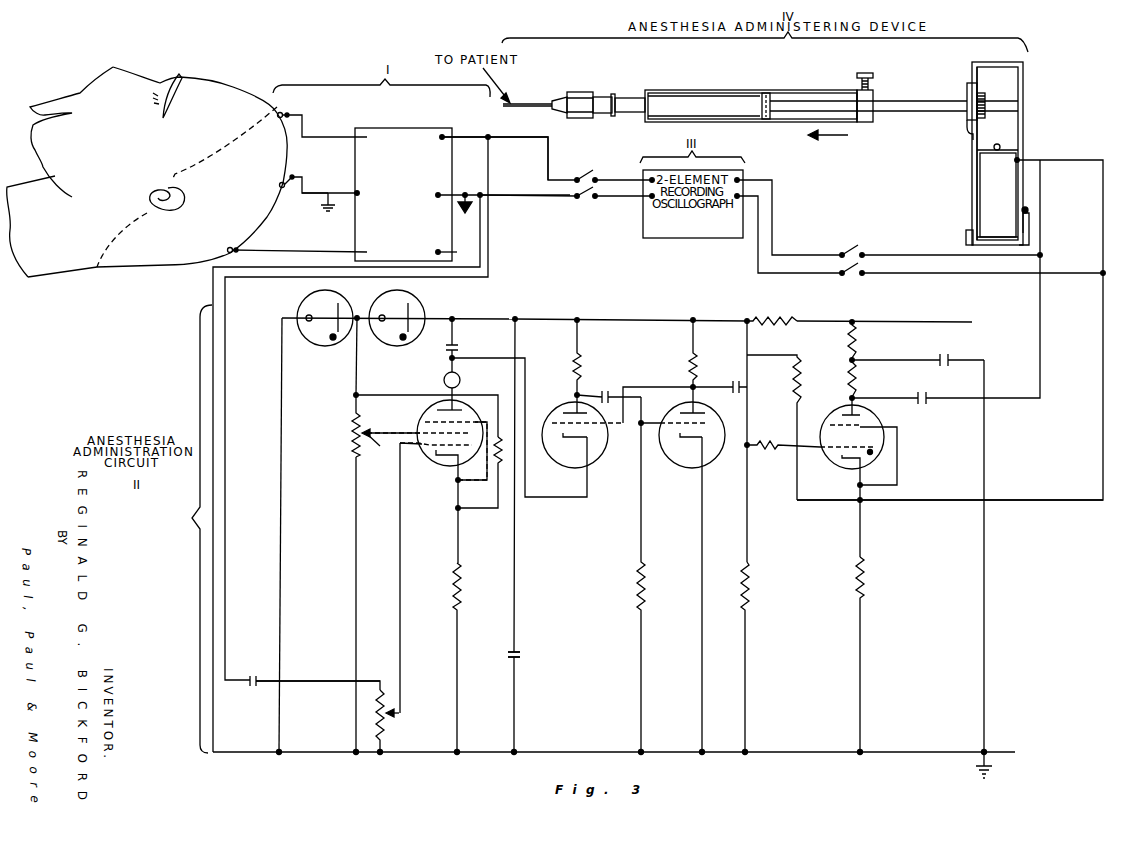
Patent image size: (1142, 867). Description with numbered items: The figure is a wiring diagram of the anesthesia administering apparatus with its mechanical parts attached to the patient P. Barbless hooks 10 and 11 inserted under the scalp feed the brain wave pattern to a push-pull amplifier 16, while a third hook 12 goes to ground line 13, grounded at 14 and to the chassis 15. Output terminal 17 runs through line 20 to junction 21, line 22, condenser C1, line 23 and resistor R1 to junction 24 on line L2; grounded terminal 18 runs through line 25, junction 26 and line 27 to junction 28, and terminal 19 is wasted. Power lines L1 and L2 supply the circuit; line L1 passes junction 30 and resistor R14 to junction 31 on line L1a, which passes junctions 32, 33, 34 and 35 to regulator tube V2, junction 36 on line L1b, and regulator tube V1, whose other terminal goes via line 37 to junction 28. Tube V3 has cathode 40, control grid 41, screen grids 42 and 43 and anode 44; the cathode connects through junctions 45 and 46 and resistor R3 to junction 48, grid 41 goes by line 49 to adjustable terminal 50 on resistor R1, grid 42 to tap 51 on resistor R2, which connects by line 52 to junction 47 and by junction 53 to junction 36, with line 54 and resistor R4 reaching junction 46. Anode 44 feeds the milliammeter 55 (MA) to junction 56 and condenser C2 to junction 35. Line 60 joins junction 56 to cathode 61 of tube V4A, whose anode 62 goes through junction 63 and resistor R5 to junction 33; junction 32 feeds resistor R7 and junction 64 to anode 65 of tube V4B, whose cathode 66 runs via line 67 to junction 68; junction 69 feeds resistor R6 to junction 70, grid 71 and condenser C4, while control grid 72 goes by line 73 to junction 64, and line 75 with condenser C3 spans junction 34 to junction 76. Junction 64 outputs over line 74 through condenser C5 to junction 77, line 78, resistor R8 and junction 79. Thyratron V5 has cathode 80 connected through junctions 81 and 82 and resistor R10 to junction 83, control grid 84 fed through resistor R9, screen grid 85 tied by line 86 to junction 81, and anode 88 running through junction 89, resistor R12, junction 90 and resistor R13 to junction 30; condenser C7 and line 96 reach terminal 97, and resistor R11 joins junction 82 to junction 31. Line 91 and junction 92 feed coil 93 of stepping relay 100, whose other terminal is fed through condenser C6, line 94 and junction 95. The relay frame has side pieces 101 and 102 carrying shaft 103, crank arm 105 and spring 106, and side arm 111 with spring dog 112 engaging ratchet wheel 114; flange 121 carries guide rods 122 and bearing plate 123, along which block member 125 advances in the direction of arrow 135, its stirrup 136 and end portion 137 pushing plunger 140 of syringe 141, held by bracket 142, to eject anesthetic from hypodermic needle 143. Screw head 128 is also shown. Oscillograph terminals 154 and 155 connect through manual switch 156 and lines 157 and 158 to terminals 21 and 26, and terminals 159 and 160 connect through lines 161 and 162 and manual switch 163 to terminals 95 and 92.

The patient P is at (216, 88).
The barbless hook 10 is at (284, 113).
The barbless hook 11 is at (231, 247).
The barbless hook 12 is at (283, 189).
The ground line 13 is at (307, 195).
The ground 14 is at (331, 210).
The chassis 15 is at (355, 191).
The push-pull amplifier 16 is at (396, 132).
The output terminal 17 is at (444, 134).
The output terminal 18 is at (437, 195).
The output terminal 19 is at (437, 252).
The line 20 is at (471, 136).
The junction 21 is at (490, 135).
The line 22 is at (489, 254).
The line 23 is at (310, 679).
The junction 24 is at (380, 756).
The line 25 is at (465, 193).
The junction 26 is at (482, 194).
The line 27 is at (481, 222).
The junction 28 is at (278, 756).
The junction 30 is at (854, 319).
The junction 31 is at (746, 319).
The junction 32 is at (694, 318).
The junction 33 is at (578, 318).
The junction 34 is at (516, 317).
The junction 35 is at (453, 317).
The junction 36 is at (357, 330).
The line 37 is at (281, 416).
The heated cathode 40 is at (440, 459).
The control grid 41 is at (438, 447).
The first screen grid 42 is at (428, 430).
The second screen grid 43 is at (440, 419).
The anode 44 is at (458, 407).
The junction 45 is at (457, 482).
The junction 46 is at (456, 509).
The junction 47 is at (354, 756).
The junction 48 is at (459, 750).
The line 49 is at (401, 546).
The adjustable terminal 50 is at (399, 702).
The variable tap 51 is at (373, 447).
The line 52 is at (355, 515).
The junction 53 is at (355, 394).
The line 54 is at (381, 395).
The milliammeter 55 is at (459, 378).
The junction 56 is at (450, 358).
The line 60 is at (526, 366).
The cathode 61 is at (584, 460).
The anode 62 is at (560, 410).
The junction 63 is at (575, 394).
The junction 64 is at (691, 390).
The anode 65 is at (687, 411).
The cathode 66 is at (689, 449).
The line 67 is at (703, 532).
The junction 68 is at (704, 750).
The junction 69 is at (643, 750).
The junction 70 is at (640, 426).
The grid 71 is at (698, 433).
The control grid 72 is at (556, 425).
The line 73 is at (636, 389).
The line 74 is at (710, 388).
The line 75 is at (516, 350).
The junction 76 is at (516, 750).
The junction 77 is at (750, 442).
The line 78 is at (748, 526).
The junction 79 is at (748, 750).
The cathode 80 is at (852, 462).
The junction 81 is at (863, 486).
The junction 82 is at (862, 503).
The junction 83 is at (863, 750).
The control grid 84 is at (860, 452).
The screen grid 85 is at (860, 423).
The line 86 is at (898, 460).
The anode 88 is at (848, 392).
The junction 89 is at (856, 397).
The junction 90 is at (850, 360).
The line 91 is at (948, 502).
The junction 92 is at (1105, 272).
The coil 93 is at (1015, 165).
The line 94 is at (1041, 346).
The junction 95 is at (1042, 254).
The line 96 is at (986, 472).
The terminal 97 is at (981, 750).
The stepping relay 100 is at (1025, 92).
The side piece 101 is at (1031, 232).
The side piece 102 is at (965, 240).
The pivot shaft 103 is at (1007, 240).
The crank arm 105 is at (1020, 226).
The spring 106 is at (1022, 207).
The side arm 111 is at (970, 195).
The spring dog 112 is at (966, 128).
The ratchet wheel 114 is at (1019, 106).
The flange 121 is at (968, 86).
The guide rods 122 is at (905, 100).
The bearing plate 123 is at (766, 92).
The block member 125 is at (873, 118).
The screw 128 is at (865, 73).
The arrow 135 is at (840, 136).
The stirrup 136 is at (710, 92).
The end portion 137 is at (656, 89).
The plunger 140 is at (634, 97).
The syringe 141 is at (603, 96).
The bracket 142 is at (578, 90).
The hypodermic needle 143 is at (530, 100).
The terminal 154 is at (648, 198).
The terminal 155 is at (648, 179).
The manual switch 156 is at (588, 167).
The line 157 is at (531, 139).
The line 158 is at (556, 197).
The terminal 159 is at (740, 179).
The terminal 160 is at (740, 195).
The line 161 is at (773, 223).
The line 162 is at (757, 265).
The manual switch 163 is at (856, 250).
The resistor R1 is at (389, 721).
The resistor R2 is at (343, 426).
The resistor R3 is at (467, 657).
The resistor R4 is at (502, 470).
The resistor R5 is at (587, 357).
The resistor R6 is at (651, 587).
The resistor R7 is at (704, 354).
The resistor R8 is at (756, 657).
The resistor R9 is at (783, 456).
The resistor R10 is at (864, 582).
The resistor R11 is at (788, 427).
The resistor R12 is at (856, 378).
The resistor R13 is at (855, 346).
The resistor R14 is at (772, 310).
The condenser C1 is at (252, 674).
The condenser C2 is at (458, 346).
The condenser C3 is at (519, 655).
The condenser C4 is at (609, 390).
The condenser C5 is at (742, 380).
The condenser C6 is at (927, 395).
The condenser C7 is at (918, 352).
The voltage regulator tube V1 is at (302, 303).
The voltage regulator tube V2 is at (420, 303).
The tube V3 is at (446, 439).
The thermionic tube V4A is at (575, 445).
The thermionic tube V4B is at (692, 446).
The thyratron tube V5 is at (852, 443).
The milliammeter MA is at (444, 379).
The power input line L1 is at (953, 320).
The line L1a is at (641, 318).
The line L1b is at (359, 312).
The power input line L2 is at (1008, 752).